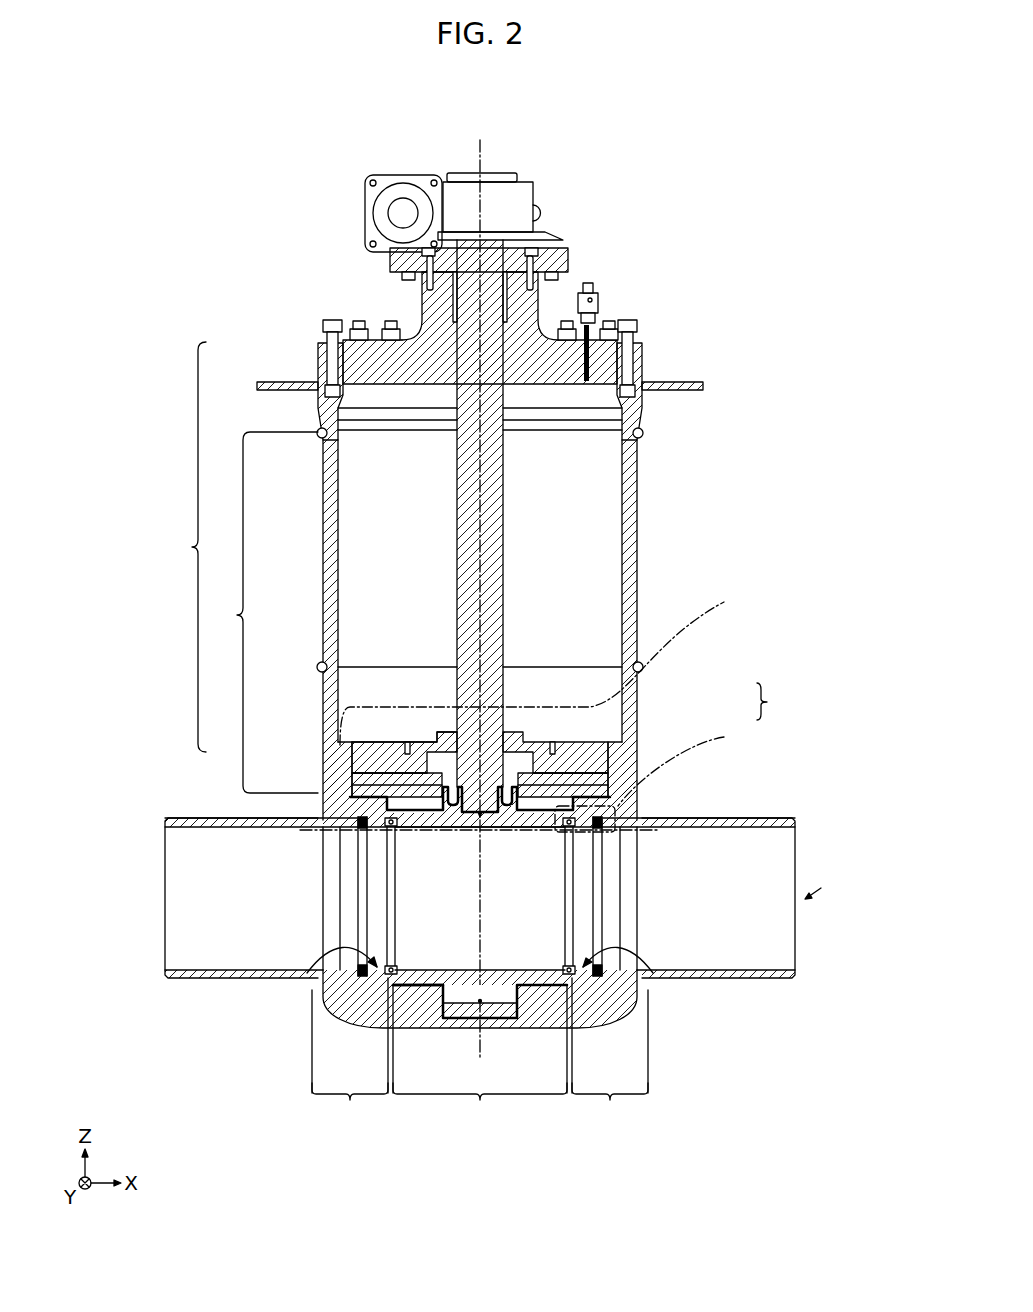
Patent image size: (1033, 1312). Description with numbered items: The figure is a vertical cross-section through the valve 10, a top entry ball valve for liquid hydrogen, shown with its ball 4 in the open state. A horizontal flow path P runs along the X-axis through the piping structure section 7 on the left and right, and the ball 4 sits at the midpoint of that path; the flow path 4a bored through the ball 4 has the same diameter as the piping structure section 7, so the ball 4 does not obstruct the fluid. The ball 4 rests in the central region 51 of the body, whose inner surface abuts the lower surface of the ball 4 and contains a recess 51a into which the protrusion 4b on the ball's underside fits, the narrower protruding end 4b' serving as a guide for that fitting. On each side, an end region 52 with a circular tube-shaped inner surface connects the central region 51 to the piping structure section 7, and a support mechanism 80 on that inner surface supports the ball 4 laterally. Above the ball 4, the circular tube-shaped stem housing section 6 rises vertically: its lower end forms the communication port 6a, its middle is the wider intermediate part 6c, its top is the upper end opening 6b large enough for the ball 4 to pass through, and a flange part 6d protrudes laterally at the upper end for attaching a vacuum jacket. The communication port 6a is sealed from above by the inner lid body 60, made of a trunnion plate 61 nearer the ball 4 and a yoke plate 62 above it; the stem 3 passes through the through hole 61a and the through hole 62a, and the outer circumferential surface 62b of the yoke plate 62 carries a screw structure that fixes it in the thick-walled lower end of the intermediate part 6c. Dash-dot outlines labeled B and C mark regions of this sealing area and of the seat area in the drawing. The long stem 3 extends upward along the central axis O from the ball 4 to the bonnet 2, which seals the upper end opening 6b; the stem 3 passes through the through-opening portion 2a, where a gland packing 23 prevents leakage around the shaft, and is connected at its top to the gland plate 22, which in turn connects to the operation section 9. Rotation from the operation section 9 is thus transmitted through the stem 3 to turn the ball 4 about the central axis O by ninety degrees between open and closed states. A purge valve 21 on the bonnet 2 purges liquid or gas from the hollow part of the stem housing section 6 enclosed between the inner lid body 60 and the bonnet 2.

The valve 10 is at (737, 167).
The operation section 9 is at (530, 187).
The gland plate 22 is at (390, 262).
The bonnet 2 is at (428, 300).
The through-opening portion 2a is at (423, 322).
The gland packing 23 is at (507, 300).
The purge valve 21 is at (597, 296).
The stem 3 is at (503, 488).
The stem housing section 6 is at (480, 645).
The communication port 6a is at (360, 809).
The upper end opening 6b is at (318, 404).
The intermediate part 6c is at (424, 614).
The flange part 6d is at (262, 383).
The inner lid body 60 is at (574, 704).
The trunnion plate 61 is at (600, 790).
The through hole 61a is at (610, 753).
The yoke plate 62 is at (600, 772).
The through hole 62a is at (535, 744).
The outer circumferential surface 62b is at (608, 766).
The region B is at (541, 667).
The region C is at (649, 778).
The central axis O is at (480, 590).
The flow path P is at (819, 885).
The ball 4 is at (425, 976).
The flow path 4a is at (455, 828).
The protrusion 4b is at (431, 955).
The protruding end 4b' is at (480, 969).
The piping structure section 7 is at (187, 980).
The support mechanism 80 is at (309, 972).
The central region 51 is at (480, 1050).
The recess 51a is at (497, 1020).
The end region 52 is at (479, 973).